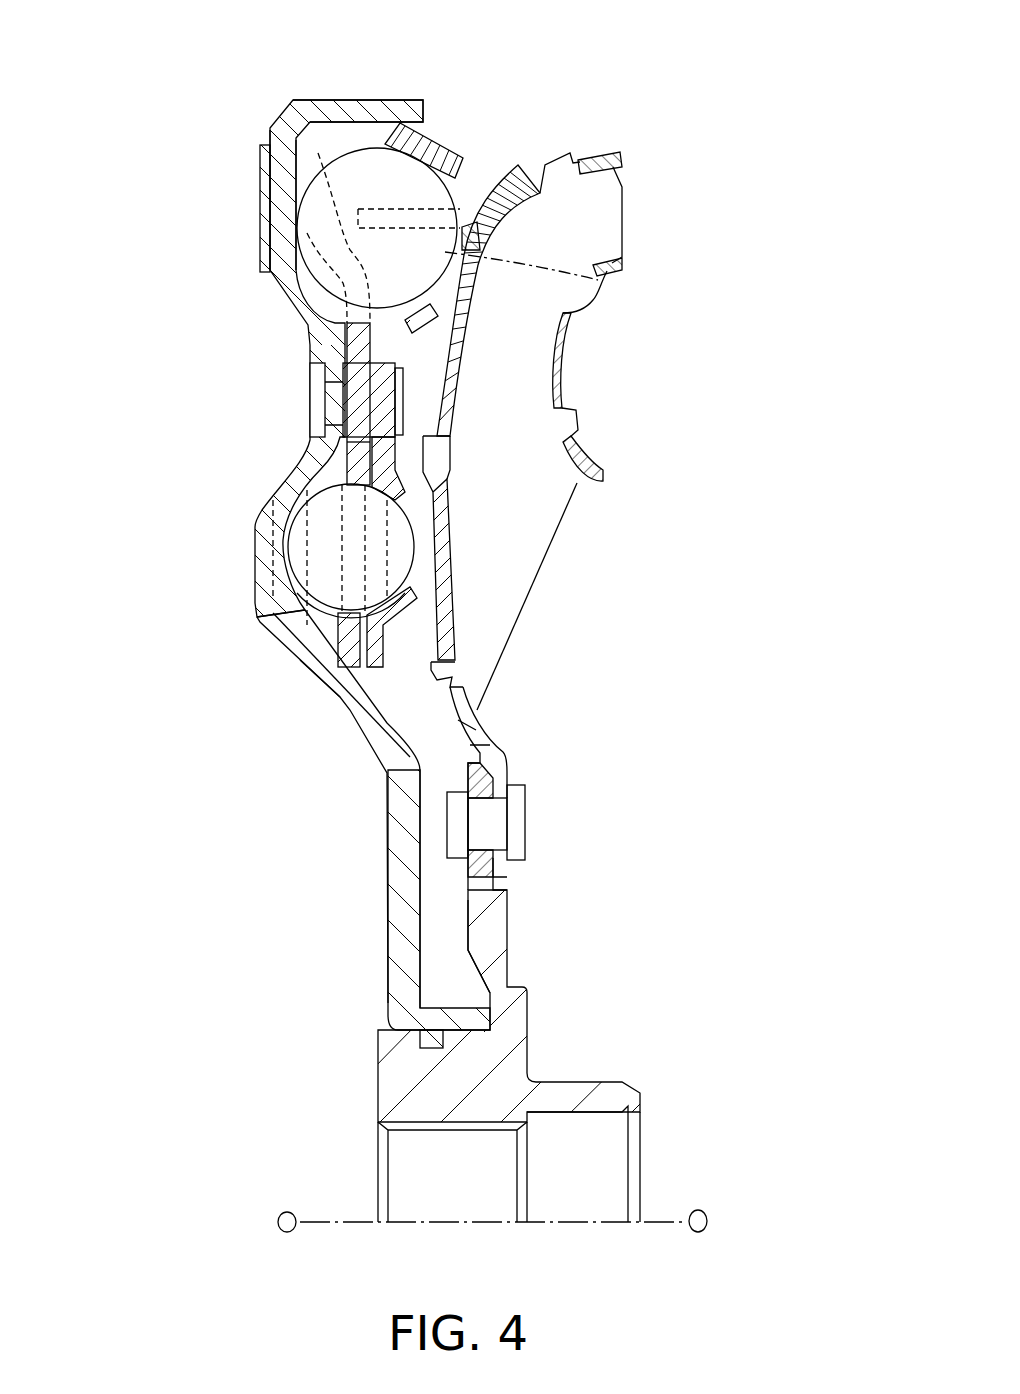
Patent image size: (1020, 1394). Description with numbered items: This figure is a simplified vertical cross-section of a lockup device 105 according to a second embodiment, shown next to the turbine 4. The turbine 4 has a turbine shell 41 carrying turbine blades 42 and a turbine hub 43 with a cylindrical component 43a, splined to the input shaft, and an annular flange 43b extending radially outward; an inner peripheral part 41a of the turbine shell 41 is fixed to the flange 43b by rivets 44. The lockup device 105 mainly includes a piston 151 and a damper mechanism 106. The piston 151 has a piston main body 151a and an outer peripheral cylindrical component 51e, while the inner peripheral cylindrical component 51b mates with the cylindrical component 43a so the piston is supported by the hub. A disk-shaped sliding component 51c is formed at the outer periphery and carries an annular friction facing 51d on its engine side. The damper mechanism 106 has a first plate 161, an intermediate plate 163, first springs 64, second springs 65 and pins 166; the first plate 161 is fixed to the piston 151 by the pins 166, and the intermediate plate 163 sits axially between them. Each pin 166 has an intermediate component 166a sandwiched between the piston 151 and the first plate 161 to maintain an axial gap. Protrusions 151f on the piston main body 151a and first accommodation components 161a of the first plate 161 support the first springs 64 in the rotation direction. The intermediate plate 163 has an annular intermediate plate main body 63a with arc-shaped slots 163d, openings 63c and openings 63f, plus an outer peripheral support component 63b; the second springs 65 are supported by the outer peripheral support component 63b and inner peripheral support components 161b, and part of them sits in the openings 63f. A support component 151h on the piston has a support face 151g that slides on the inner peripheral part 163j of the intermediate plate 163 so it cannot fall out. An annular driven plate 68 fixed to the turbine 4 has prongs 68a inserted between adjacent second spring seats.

The lockup device 105 is at (283, 108).
The outer peripheral cylindrical component 51e is at (372, 105).
The friction facing 51d is at (262, 155).
The sliding component 51c is at (277, 228).
The openings 63f is at (297, 202).
The outer peripheral support component 63b is at (395, 137).
The second springs 65 is at (348, 160).
The intermediate plate 163 is at (440, 140).
The damper mechanism 106 is at (478, 142).
The driven plate 68 is at (527, 170).
The turbine 4 is at (627, 152).
The turbine blades 42 is at (608, 202).
The prongs 68a is at (590, 273).
The inner peripheral support components 161b is at (450, 347).
The first plate 161 is at (560, 452).
The first accommodation components 161a is at (407, 577).
The inner peripheral part 163j is at (433, 637).
The turbine shell 41 is at (507, 743).
The rivets 44 is at (497, 825).
The inner peripheral part 41a is at (500, 867).
The flange 43b is at (495, 928).
The turbine hub 43 is at (533, 998).
The cylindrical component 43a is at (385, 1095).
The inner peripheral cylindrical component 51b is at (450, 1017).
The piston 151 is at (360, 735).
The piston main body 151a is at (370, 747).
The support component 151h is at (330, 678).
The support face 151g is at (345, 647).
The protrusions 151f is at (293, 592).
The openings 63c is at (347, 593).
The first springs 64 is at (313, 493).
The pins 166 is at (305, 397).
The intermediate component 166a is at (355, 402).
The slots 163d is at (358, 367).
The intermediate plate main body 63a is at (353, 457).